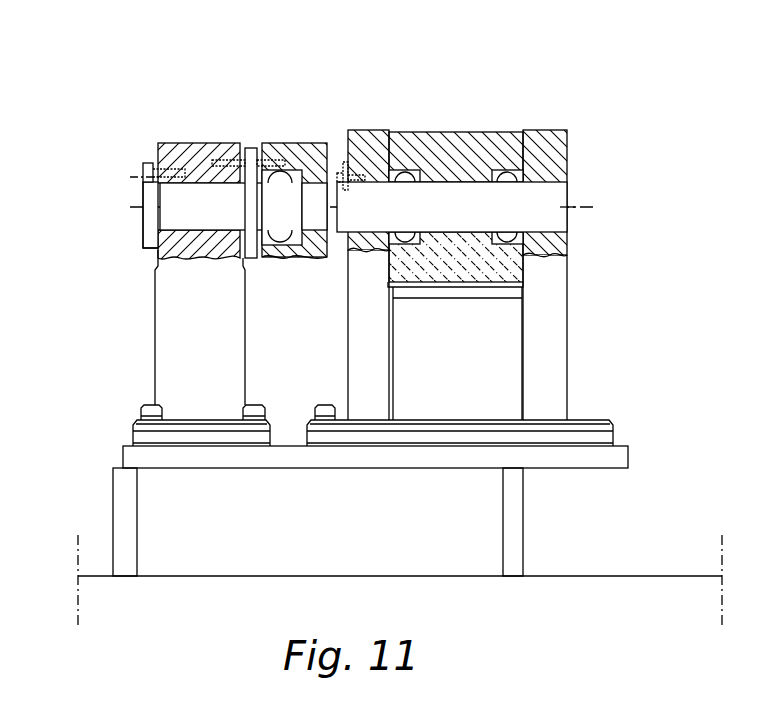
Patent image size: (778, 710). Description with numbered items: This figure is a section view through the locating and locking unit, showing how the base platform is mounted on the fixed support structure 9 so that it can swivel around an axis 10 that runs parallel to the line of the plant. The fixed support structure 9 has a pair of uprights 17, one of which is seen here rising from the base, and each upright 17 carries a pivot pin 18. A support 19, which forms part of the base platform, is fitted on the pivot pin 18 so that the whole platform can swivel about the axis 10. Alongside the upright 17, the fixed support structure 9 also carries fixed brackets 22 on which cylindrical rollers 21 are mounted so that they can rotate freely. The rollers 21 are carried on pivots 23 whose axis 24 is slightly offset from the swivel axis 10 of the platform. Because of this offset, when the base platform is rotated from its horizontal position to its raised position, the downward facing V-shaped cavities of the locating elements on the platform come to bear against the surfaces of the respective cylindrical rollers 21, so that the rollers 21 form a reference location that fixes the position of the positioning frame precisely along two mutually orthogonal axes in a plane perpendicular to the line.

The fixed support structure 9 is at (108, 488).
The axis 10 is at (157, 195).
The uprights 17 is at (153, 288).
The pivot pin 18 is at (203, 192).
The support 19 is at (313, 145).
The cylindrical rollers 21 is at (460, 157).
The fixed brackets 22 is at (563, 328).
The pivots 23 is at (555, 198).
The axis 24 is at (553, 210).